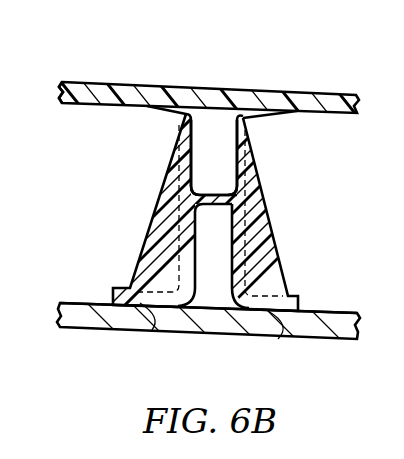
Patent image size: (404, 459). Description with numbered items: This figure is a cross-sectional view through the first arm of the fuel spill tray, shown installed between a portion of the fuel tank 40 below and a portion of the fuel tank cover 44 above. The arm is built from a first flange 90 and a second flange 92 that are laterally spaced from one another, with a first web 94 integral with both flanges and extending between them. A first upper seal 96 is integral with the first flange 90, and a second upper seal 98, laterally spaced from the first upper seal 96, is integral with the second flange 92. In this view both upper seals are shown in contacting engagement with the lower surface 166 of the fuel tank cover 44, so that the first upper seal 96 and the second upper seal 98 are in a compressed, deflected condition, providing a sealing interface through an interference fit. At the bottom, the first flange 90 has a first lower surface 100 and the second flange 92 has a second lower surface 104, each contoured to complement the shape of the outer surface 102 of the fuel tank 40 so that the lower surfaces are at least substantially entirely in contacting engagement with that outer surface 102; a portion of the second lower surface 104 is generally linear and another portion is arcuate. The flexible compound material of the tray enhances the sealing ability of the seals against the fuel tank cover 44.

The fuel tank 40 is at (213, 333).
The fuel tank cover 44 is at (326, 90).
The first flange 90 is at (145, 237).
The second flange 92 is at (270, 223).
The first web 94 is at (209, 192).
The first upper seal 96 is at (160, 111).
The second upper seal 98 is at (273, 118).
The first lower surface 100 is at (150, 305).
The outer surface 102 is at (338, 312).
The second lower surface 104 is at (282, 313).
The lower surface 166 is at (72, 105).